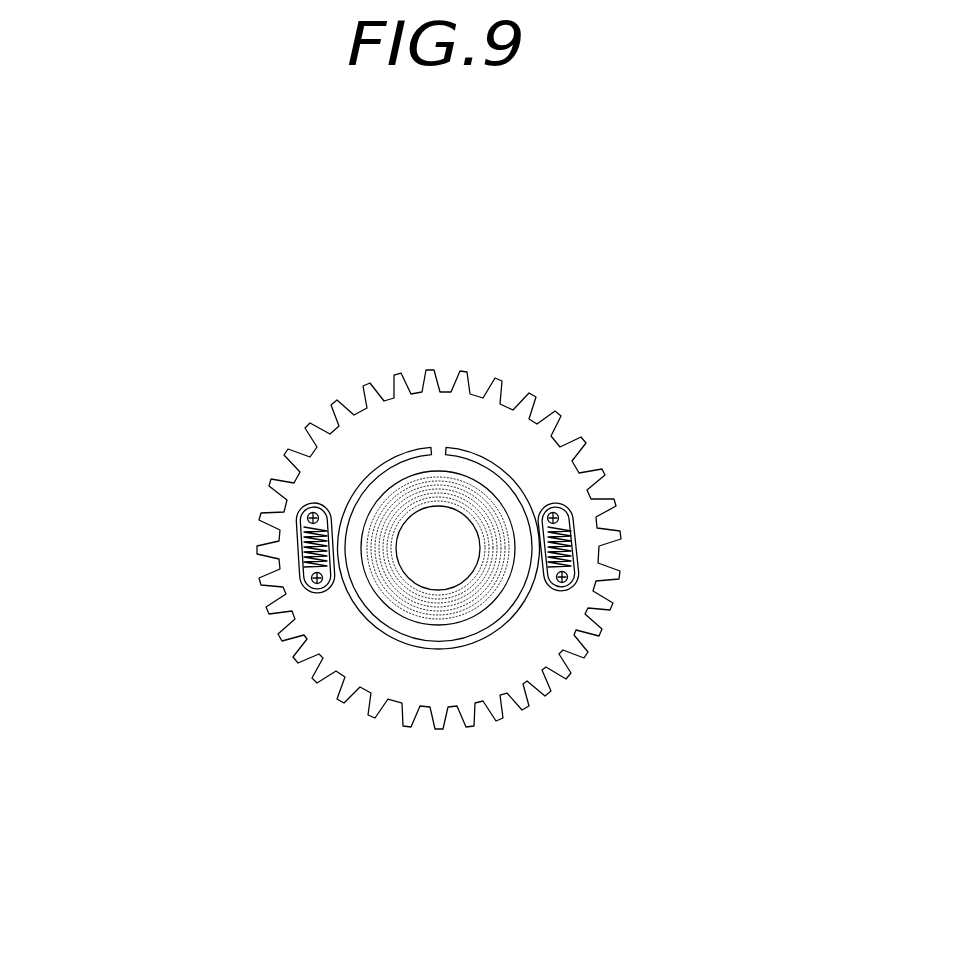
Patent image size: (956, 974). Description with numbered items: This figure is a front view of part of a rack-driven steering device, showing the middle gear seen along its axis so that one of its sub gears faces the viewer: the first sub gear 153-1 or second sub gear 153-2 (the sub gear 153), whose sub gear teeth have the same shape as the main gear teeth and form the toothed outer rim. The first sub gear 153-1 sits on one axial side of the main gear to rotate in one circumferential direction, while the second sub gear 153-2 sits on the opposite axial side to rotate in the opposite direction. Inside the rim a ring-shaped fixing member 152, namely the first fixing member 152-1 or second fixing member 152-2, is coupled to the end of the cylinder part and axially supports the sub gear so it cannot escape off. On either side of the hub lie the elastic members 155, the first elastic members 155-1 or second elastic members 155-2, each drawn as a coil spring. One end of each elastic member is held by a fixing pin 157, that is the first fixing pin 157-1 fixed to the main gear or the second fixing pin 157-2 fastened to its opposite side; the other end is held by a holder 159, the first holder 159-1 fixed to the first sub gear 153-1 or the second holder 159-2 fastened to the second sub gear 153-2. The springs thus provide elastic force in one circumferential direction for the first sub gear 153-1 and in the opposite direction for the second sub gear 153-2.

The retaining ring 152 is at (485, 495).
The first fixing member 152-1 is at (485, 495).
The second fixing member 152-2 is at (467, 455).
The gear 153 is at (439, 597).
The first sub gear 153-1 is at (439, 597).
The second sub gear 153-2 is at (445, 683).
The spring 155 is at (434, 547).
The first elastic member 155-1 is at (434, 547).
The second elastic member 155-2 is at (303, 543).
The spring support pin 157 is at (308, 595).
The first fixing pin 157-1 is at (308, 595).
The second fixing pin 157-2 is at (303, 573).
The spring fixing pin 159 is at (371, 442).
The first holder 159-1 is at (371, 442).
The second holder 159-2 is at (333, 507).